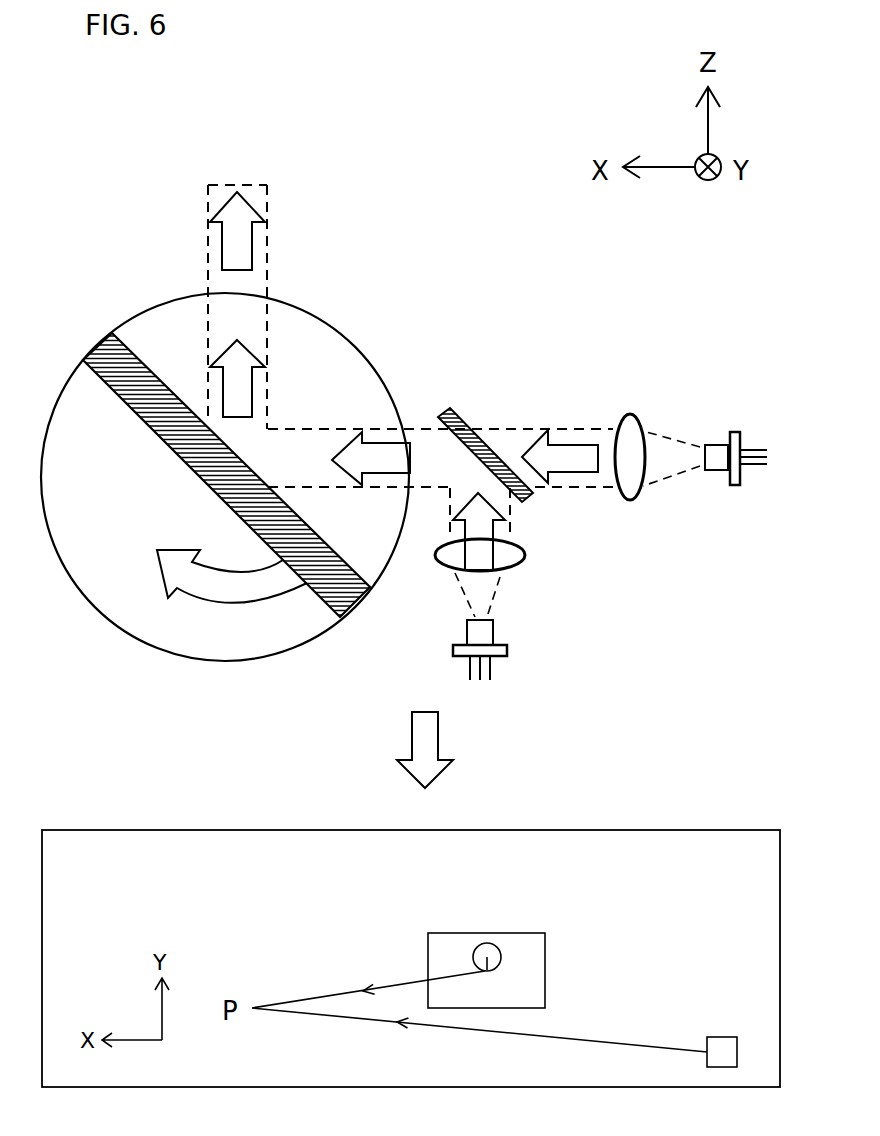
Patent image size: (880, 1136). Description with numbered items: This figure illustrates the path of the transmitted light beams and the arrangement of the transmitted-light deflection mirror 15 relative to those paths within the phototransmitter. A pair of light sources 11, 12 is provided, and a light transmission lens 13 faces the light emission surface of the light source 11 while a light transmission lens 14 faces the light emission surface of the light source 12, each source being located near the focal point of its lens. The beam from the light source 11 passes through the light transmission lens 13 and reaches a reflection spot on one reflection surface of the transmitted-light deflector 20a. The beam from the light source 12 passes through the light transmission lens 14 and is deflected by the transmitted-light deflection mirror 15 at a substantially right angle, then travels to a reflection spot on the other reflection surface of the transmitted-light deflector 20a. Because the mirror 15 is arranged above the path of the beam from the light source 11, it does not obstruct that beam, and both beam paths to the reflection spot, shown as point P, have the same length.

The light source 11 is at (720, 443).
The light source 12 is at (493, 633).
The light transmission lens 13 is at (633, 410).
The light transmission lens 14 is at (527, 557).
The transmitted-light deflection mirror 15 is at (457, 405).
The transmitted-light deflector 20a is at (147, 427).
The irradiation point P is at (240, 458).